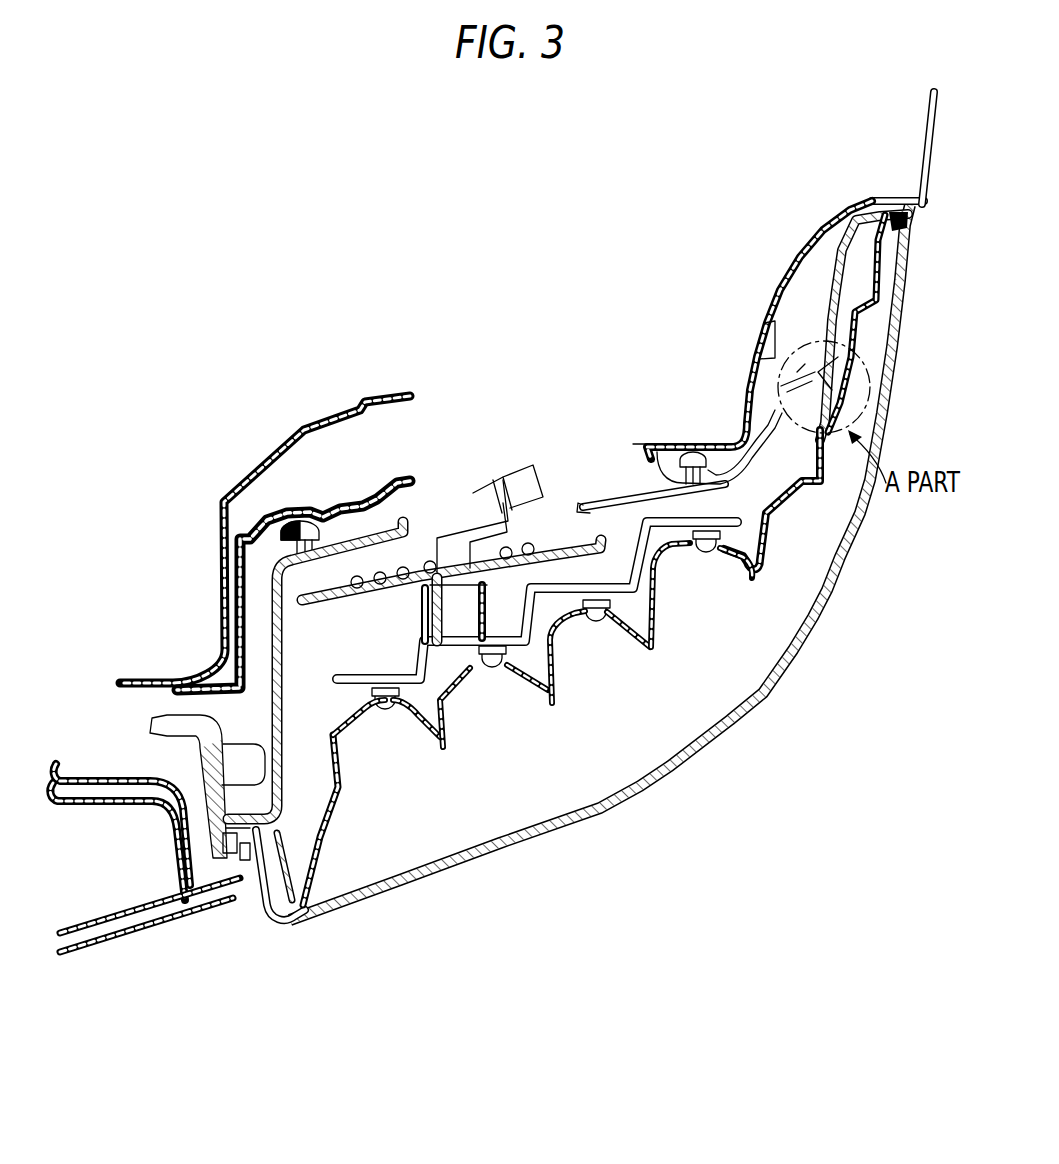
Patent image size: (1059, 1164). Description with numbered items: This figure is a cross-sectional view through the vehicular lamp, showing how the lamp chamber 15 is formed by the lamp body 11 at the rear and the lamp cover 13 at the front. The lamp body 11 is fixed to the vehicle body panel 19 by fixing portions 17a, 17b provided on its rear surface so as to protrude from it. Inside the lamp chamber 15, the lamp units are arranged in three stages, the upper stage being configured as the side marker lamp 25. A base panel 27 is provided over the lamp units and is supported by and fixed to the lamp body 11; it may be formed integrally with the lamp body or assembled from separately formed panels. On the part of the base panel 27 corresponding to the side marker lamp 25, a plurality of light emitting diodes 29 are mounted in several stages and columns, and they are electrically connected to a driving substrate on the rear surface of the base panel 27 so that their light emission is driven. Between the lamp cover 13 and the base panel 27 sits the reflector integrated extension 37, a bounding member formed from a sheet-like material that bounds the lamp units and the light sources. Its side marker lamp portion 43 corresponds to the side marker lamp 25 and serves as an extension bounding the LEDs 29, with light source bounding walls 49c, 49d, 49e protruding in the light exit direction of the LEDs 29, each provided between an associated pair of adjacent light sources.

The lamp body 11 is at (624, 486).
The lamp cover 13 is at (382, 910).
The lamp chamber 15 is at (717, 675).
The fixing portion 17a is at (262, 541).
The fixing portion 17b is at (668, 452).
The vehicle body panel 19 is at (800, 250).
The side marker lamp 25 is at (615, 868).
The base panel 27 is at (620, 570).
The light emitting diodes 29 is at (385, 712).
The reflector integrated extension 37 is at (300, 912).
The side marker lamp portion 43 is at (348, 740).
The light source bounding wall 49c is at (445, 750).
The light source bounding wall 49d is at (552, 703).
The light source bounding wall 49e is at (648, 650).